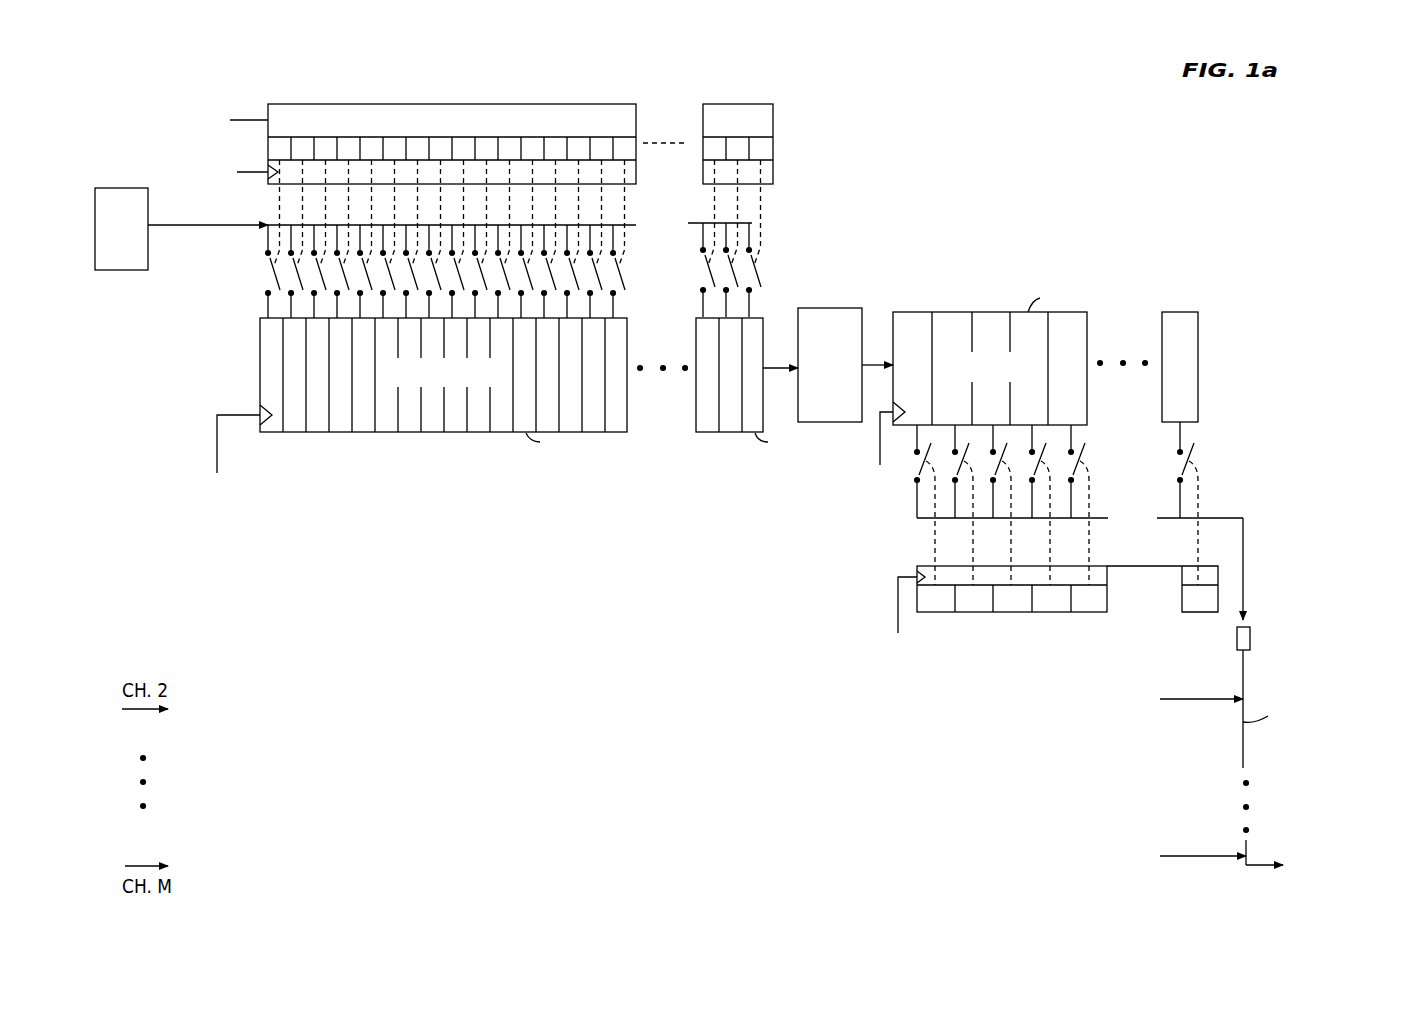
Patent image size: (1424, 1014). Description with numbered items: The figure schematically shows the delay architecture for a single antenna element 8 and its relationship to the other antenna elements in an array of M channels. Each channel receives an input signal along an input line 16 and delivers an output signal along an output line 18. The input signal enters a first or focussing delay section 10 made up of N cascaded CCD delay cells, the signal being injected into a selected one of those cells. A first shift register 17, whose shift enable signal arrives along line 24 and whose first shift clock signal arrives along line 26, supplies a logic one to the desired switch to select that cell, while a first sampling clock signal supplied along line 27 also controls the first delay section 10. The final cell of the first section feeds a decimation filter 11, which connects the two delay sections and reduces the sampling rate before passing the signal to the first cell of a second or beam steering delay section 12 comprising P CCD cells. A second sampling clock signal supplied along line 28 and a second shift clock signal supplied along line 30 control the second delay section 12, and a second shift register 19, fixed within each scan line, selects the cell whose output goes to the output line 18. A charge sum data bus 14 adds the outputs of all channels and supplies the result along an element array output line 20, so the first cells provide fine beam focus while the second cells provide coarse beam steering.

The antenna element 8 is at (120, 188).
The shift enable line 24 is at (250, 118).
The first shift register 17 is at (469, 104).
The input line 16 is at (200, 224).
The first shift clock line 26 is at (247, 178).
The first delay section 10 is at (262, 462).
The first sampling clock line 27 is at (217, 450).
The decimation filter 11 is at (820, 308).
The second delay section 12 is at (1197, 270).
The second sampling clock line 28 is at (880, 447).
The second shift register 19 is at (1029, 612).
The second shift clock line 30 is at (898, 595).
The output line 18 is at (1245, 552).
The charge sum data bus 14 is at (1247, 675).
The element array output line 20 is at (1265, 865).